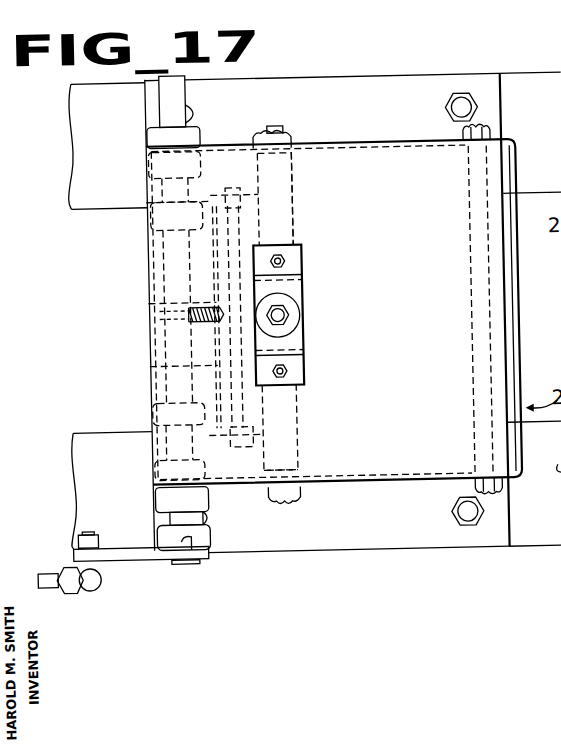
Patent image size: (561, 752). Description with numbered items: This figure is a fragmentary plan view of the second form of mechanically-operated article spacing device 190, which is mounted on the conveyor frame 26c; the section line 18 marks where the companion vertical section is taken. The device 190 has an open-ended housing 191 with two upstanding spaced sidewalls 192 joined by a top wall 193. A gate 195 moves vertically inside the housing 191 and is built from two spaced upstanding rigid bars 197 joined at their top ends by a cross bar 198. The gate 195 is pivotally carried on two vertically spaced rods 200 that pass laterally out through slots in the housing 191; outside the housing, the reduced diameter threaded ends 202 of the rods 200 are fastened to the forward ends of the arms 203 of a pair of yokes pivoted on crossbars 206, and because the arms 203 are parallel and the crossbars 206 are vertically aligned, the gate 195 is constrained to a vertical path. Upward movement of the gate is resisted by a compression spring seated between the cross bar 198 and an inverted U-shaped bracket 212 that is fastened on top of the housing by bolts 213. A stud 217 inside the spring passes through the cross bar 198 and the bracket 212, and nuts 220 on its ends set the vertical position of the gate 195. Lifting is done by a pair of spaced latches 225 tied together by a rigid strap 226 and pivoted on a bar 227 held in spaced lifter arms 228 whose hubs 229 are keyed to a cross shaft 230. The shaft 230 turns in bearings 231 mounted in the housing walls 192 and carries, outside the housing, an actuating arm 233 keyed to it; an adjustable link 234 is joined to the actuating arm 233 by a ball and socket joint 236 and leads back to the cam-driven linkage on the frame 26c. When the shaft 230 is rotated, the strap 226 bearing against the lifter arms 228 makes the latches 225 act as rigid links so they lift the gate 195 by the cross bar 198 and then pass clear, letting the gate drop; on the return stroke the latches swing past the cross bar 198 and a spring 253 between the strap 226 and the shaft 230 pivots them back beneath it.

The conveyor frame 26c is at (70, 105).
The article spacing device 190 is at (140, 257).
The housing 191 is at (346, 188).
The sidewalls 192 is at (228, 149).
The top wall 193 is at (371, 457).
The gate 195 is at (306, 432).
The rigid bars 197 is at (297, 155).
The cross bar 198 is at (288, 213).
The rods 200 is at (287, 130).
The threaded ends 202 is at (293, 130).
The arms 203 is at (445, 138).
The crossbars 206 is at (488, 499).
The inverted U-shaped bracket 212 is at (295, 287).
The bolts 213 is at (287, 261).
The stud 217 is at (290, 315).
The nuts 220 is at (290, 325).
The latches 225 is at (264, 191).
The rigid strap 226 is at (157, 363).
The bar 227 is at (234, 441).
The lifter arms 228 is at (177, 314).
The hubs 229 is at (158, 227).
The bearings 231 is at (177, 301).
The cross shaft 230 is at (181, 560).
The actuating arm 233 is at (119, 550).
The adjustable link 234 is at (39, 578).
The ball and socket joint 236 is at (86, 579).
The spring 253 is at (154, 302).
The section line 18 is at (61, 350).